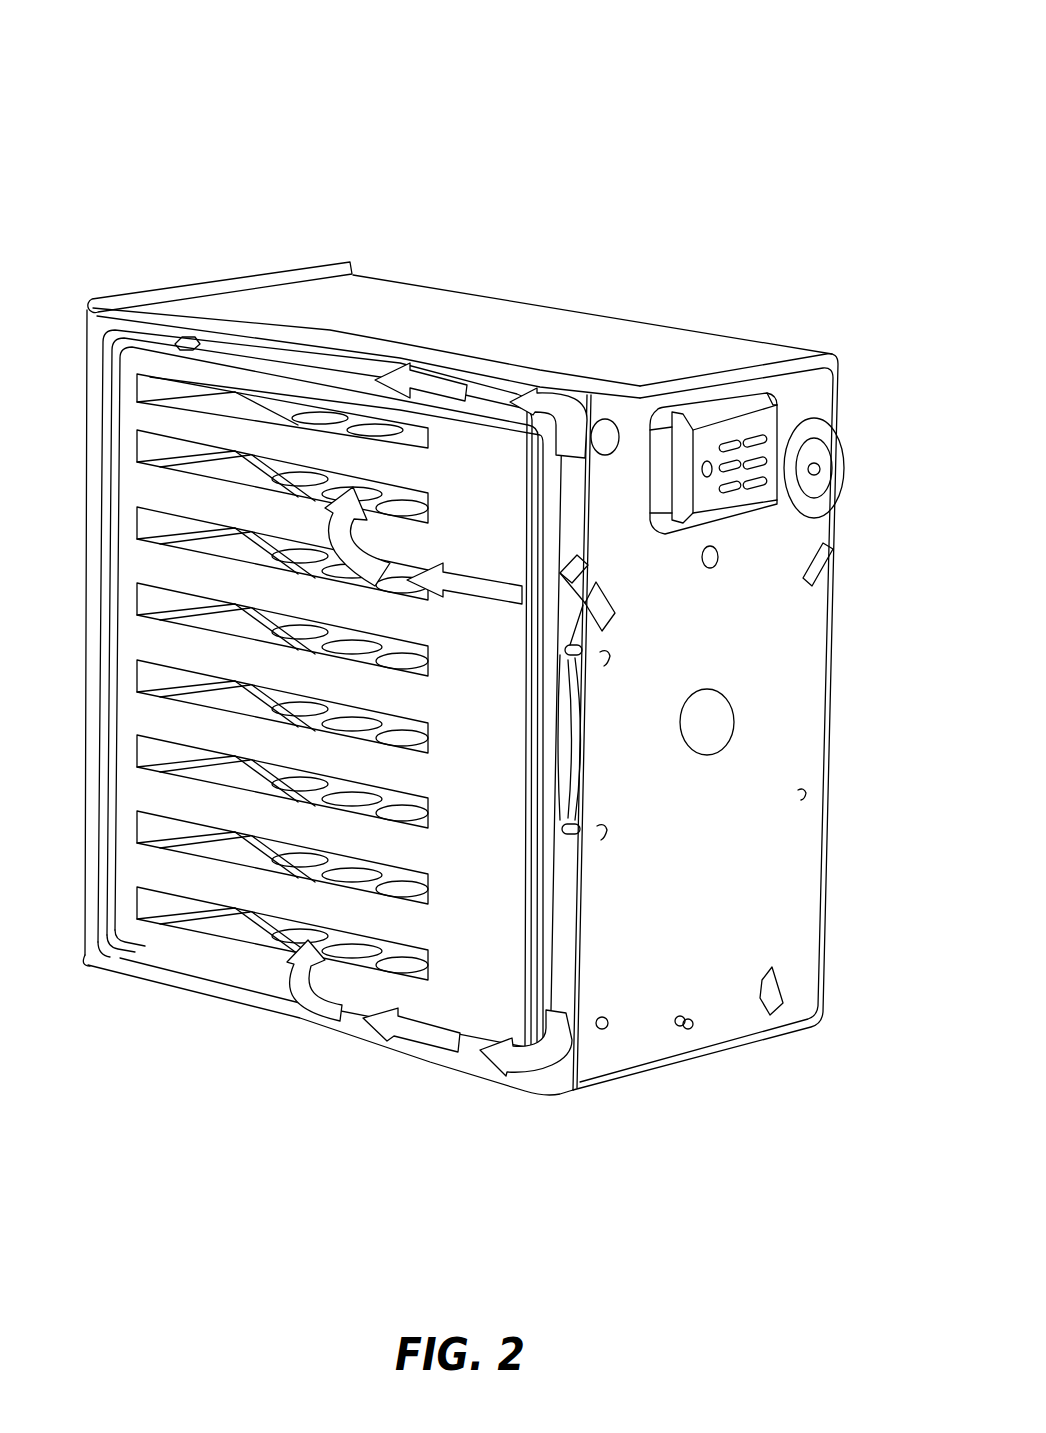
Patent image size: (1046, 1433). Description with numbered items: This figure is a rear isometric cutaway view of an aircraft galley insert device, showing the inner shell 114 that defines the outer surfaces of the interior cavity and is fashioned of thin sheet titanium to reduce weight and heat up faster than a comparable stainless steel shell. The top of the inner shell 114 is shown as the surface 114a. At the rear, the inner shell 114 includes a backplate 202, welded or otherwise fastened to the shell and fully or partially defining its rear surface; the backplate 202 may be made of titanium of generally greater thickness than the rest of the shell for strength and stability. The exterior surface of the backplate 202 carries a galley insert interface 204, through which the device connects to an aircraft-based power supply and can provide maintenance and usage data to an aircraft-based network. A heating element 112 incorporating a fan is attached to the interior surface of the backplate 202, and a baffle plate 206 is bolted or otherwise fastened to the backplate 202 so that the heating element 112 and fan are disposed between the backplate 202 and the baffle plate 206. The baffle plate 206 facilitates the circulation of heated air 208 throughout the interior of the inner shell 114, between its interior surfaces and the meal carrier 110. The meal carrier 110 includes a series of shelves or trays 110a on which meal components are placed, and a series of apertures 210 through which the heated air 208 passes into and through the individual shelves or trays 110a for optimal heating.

The inner shell 114 is at (110, 63).
The top panel 114a is at (435, 307).
The meal carrier 110 is at (233, 965).
The shelves or trays 110a is at (140, 840).
The apertures 210 is at (160, 674).
The heated air 208 is at (343, 508).
The galley insert (GAIN) interface 204 is at (768, 435).
The backplate 202 is at (732, 855).
The baffle plate 206 is at (560, 935).
The heating element 112 is at (572, 738).